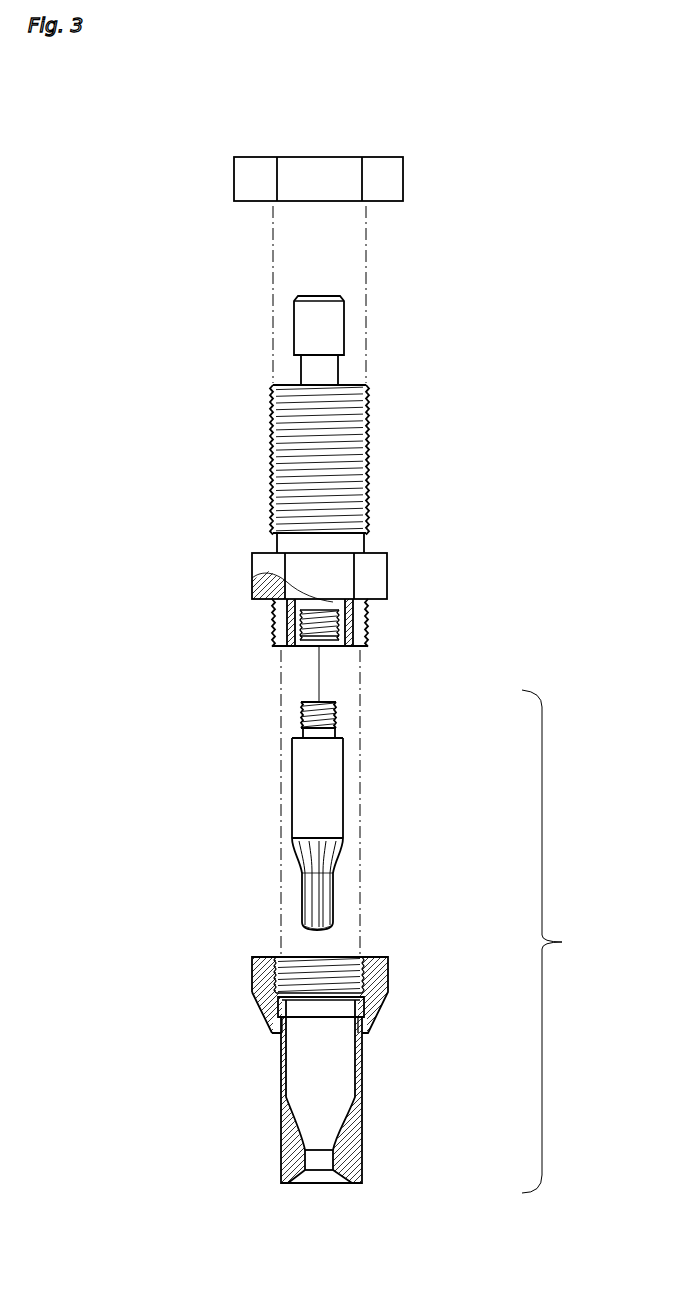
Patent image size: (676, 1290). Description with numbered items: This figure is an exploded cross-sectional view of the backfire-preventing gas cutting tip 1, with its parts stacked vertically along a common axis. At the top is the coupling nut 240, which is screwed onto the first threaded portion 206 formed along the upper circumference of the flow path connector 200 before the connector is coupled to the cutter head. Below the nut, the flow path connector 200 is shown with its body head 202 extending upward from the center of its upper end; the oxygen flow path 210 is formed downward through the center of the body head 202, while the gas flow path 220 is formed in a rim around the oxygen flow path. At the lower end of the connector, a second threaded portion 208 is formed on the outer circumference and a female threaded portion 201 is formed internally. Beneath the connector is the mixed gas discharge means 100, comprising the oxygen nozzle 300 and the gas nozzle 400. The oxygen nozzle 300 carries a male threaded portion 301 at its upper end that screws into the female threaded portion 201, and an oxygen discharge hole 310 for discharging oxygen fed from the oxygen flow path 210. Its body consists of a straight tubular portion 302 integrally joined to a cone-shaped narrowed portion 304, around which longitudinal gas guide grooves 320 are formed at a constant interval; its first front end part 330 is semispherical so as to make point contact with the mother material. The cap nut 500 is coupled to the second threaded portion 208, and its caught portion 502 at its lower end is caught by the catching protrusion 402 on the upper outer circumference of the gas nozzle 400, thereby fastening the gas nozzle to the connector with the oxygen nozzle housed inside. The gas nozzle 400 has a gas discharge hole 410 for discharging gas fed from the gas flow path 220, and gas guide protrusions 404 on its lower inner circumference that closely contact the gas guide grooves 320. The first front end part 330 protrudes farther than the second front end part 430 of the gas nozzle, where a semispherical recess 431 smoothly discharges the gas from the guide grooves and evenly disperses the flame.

The gas cutting tip 1 is at (160, 560).
The mixed gas discharge means 100 is at (388, 945).
The flow path connector 200 is at (384, 486).
The female threaded portion 201 is at (307, 649).
The body head 202 is at (307, 318).
The first threaded portion 206 is at (282, 430).
The second threaded portion 208 is at (368, 625).
The oxygen flow path 210 is at (292, 598).
The gas flow path 220 is at (276, 620).
The coupling nut 240 is at (410, 150).
The oxygen nozzle 300 is at (368, 786).
The male threaded portion 301 is at (300, 710).
The straight tubular portion 302 is at (300, 782).
The narrowed portion 304 is at (310, 890).
The oxygen discharge hole 310 is at (322, 703).
The gas guide grooves 320 is at (330, 878).
The first front end part 330 is at (312, 940).
The gas nozzle 400 is at (370, 1117).
The catching protrusion 402 is at (282, 1008).
The gas guide protrusions 404 is at (305, 1158).
The gas discharge hole 410 is at (290, 1083).
The second front end part 430 is at (290, 1178).
The semispherical recess 431 is at (340, 1178).
The cap nut 500 is at (398, 959).
The caught portion 502 is at (275, 1033).